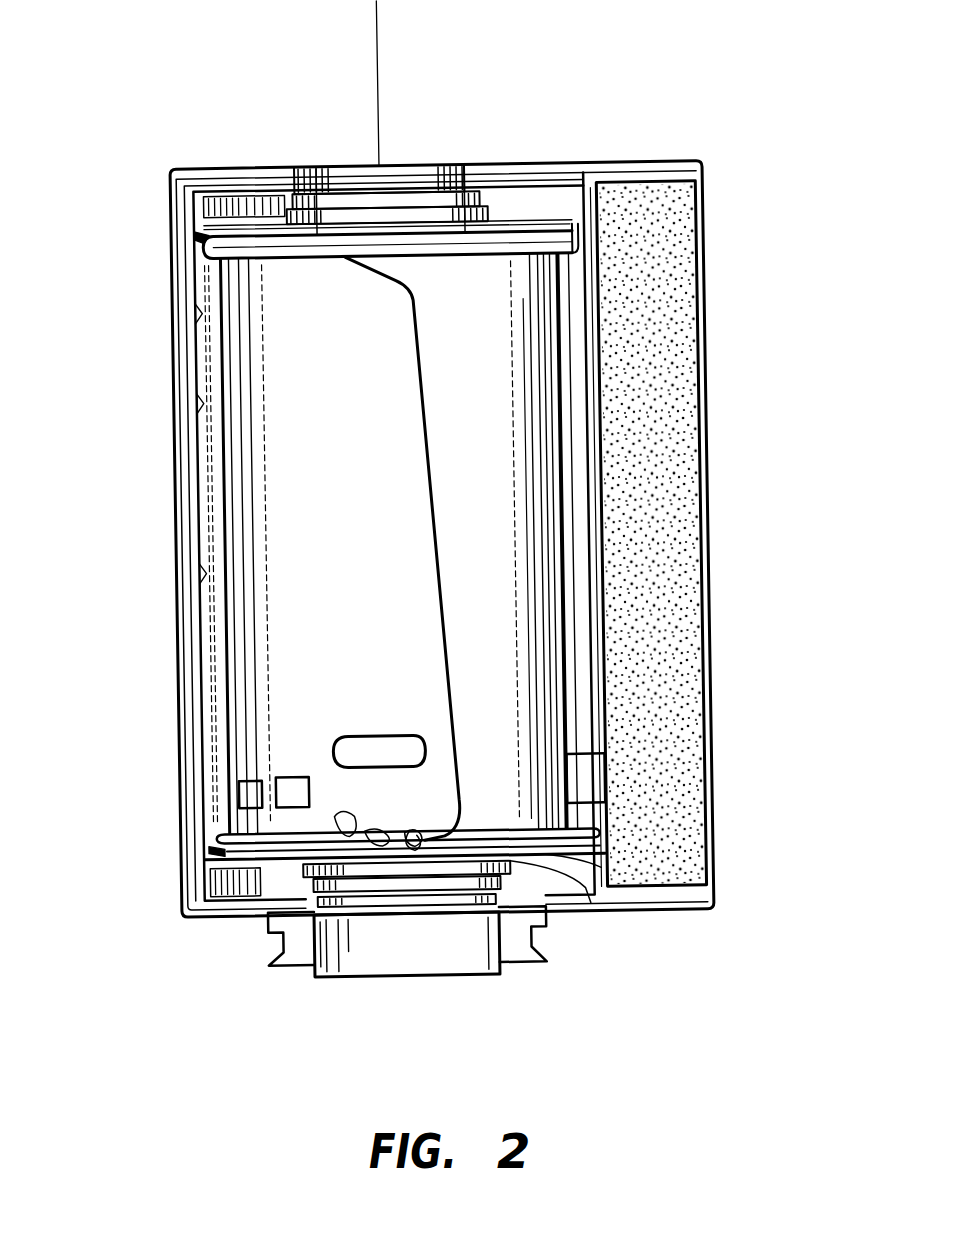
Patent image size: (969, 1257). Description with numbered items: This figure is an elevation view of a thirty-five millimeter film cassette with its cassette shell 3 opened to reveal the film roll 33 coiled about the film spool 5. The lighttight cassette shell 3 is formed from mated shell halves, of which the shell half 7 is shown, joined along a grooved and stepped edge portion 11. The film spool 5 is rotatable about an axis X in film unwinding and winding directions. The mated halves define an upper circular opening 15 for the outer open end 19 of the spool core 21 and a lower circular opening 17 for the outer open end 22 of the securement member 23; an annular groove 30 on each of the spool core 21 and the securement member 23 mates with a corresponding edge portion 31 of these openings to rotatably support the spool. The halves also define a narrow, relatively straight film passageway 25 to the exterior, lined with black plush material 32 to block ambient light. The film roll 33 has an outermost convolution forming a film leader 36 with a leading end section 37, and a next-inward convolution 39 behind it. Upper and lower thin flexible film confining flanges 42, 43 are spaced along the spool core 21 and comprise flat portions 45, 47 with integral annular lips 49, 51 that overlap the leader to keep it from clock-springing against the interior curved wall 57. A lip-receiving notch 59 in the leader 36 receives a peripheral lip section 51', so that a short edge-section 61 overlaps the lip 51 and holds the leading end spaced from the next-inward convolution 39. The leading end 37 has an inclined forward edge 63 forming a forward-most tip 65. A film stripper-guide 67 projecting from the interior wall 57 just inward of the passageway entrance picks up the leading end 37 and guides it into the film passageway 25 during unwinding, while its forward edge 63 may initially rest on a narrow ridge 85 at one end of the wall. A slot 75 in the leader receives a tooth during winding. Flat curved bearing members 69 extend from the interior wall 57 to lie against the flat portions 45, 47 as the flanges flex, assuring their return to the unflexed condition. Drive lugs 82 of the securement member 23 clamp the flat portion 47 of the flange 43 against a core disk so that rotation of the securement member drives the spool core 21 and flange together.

The axis X is at (378, 40).
The shell half 7 is at (186, 164).
The grooved and stepped edge portion 11 is at (184, 308).
The cassette shell 3 is at (237, 160).
The film leader 36 is at (232, 480).
The interior curved wall 57 is at (204, 400).
The film roll 33 is at (216, 566).
The film spool 5 is at (216, 622).
The next-inward convolution 39 is at (515, 480).
The leading end section 37 is at (430, 580).
The forward edge 63 is at (435, 490).
The forward-most tip 65 is at (416, 838).
The flat portion 45 is at (542, 215).
The annular lip 49 is at (575, 230).
The film confining flange 42 is at (196, 234).
The annular groove 30 is at (368, 188).
The outer open end 19 is at (316, 165).
The edge portion 31 is at (450, 185).
The upper circular opening 15 is at (478, 165).
The spool core 21 is at (322, 100).
The bearing member 69 is at (220, 205).
The film passageway 25 is at (700, 395).
The plush material 32 is at (655, 252).
The narrow ridge 85 is at (600, 585).
The film stripper-guide 67 is at (555, 760).
The slot 75 is at (380, 740).
The lip-receiving notch 59 is at (345, 828).
The film confining flange 43 is at (208, 850).
The peripheral lip section 51' is at (368, 809).
The edge-section 61 is at (402, 810).
The drive lug 82 is at (510, 866).
The outer open end 22 is at (345, 980).
The securement member 23 is at (300, 968).
The lower circular opening 17 is at (502, 920).
The flat portion 47 is at (580, 900).
The annular lip 51 is at (614, 903).